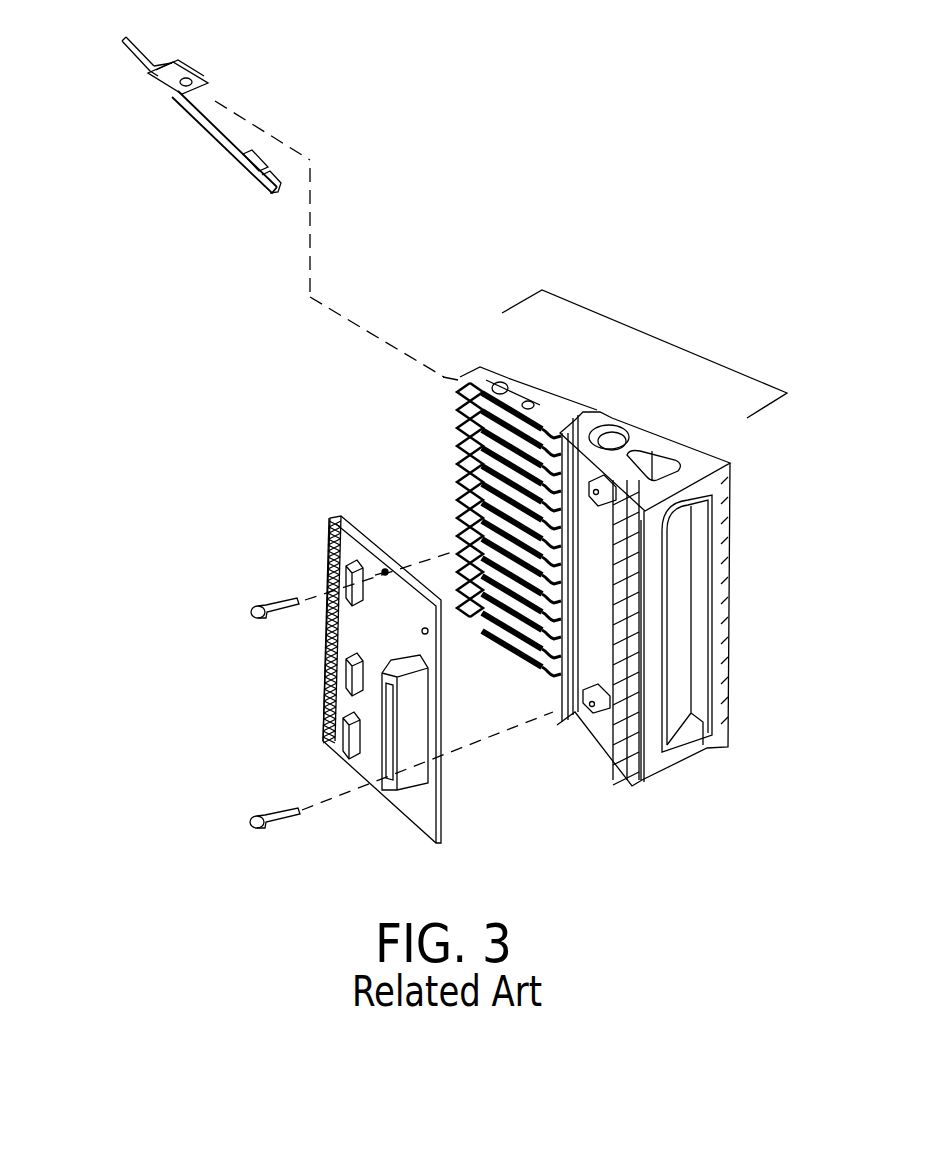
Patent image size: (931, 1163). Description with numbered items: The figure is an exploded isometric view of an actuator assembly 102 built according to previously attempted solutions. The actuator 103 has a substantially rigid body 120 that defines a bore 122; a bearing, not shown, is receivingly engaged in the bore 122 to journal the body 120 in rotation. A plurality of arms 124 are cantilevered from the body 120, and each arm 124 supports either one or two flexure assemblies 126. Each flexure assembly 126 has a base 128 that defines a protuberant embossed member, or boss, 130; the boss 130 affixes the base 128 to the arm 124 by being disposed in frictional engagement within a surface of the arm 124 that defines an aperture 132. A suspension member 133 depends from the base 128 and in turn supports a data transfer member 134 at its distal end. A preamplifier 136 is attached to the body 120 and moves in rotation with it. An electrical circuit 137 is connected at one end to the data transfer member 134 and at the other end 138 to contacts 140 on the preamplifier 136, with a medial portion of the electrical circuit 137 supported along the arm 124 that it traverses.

The actuator assembly 102 is at (644, 302).
The actuator 103 is at (633, 326).
The body 120 is at (671, 593).
The bore 122 is at (622, 424).
The arms 124 is at (450, 553).
The flexure assembly 126 is at (190, 117).
The base 128 is at (213, 51).
The protuberant embossed member 130 is at (193, 75).
The aperture 132 is at (481, 366).
The suspension member 133 is at (137, 62).
The data transfer member 134 is at (125, 43).
The preamplifier 136 is at (376, 672).
The electrical circuit 137 is at (212, 128).
The other end 138 is at (277, 192).
The contacts 140 is at (333, 541).